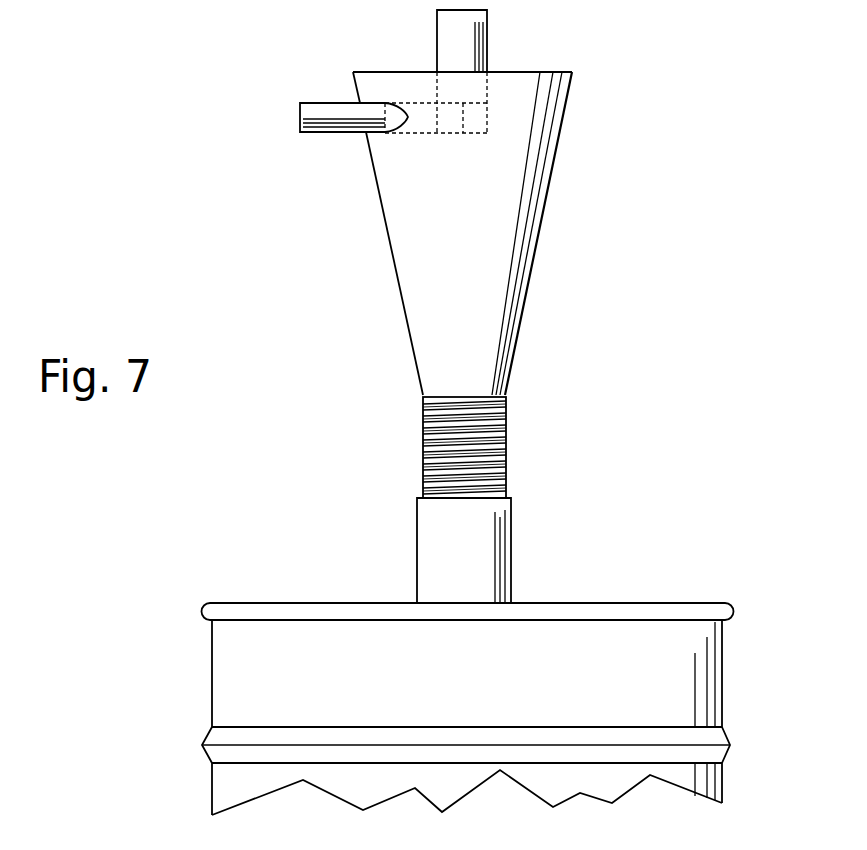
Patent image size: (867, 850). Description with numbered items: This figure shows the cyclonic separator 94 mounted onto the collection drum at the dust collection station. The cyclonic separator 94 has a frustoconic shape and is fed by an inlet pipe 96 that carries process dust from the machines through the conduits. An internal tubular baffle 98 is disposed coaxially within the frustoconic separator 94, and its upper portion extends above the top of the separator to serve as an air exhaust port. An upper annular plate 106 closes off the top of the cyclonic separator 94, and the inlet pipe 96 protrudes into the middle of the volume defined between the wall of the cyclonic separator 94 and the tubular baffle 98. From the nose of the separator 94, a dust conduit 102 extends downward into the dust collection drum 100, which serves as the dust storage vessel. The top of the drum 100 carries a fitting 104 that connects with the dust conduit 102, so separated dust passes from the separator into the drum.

The cyclonic separator 94 is at (522, 320).
The inlet pipe 96 is at (300, 112).
The internal tubular baffle 98 is at (437, 62).
The dust collection drum 100 is at (668, 600).
The dust conduit 102 is at (508, 450).
The fitting 104 is at (513, 560).
The upper annular plate 106 is at (562, 68).